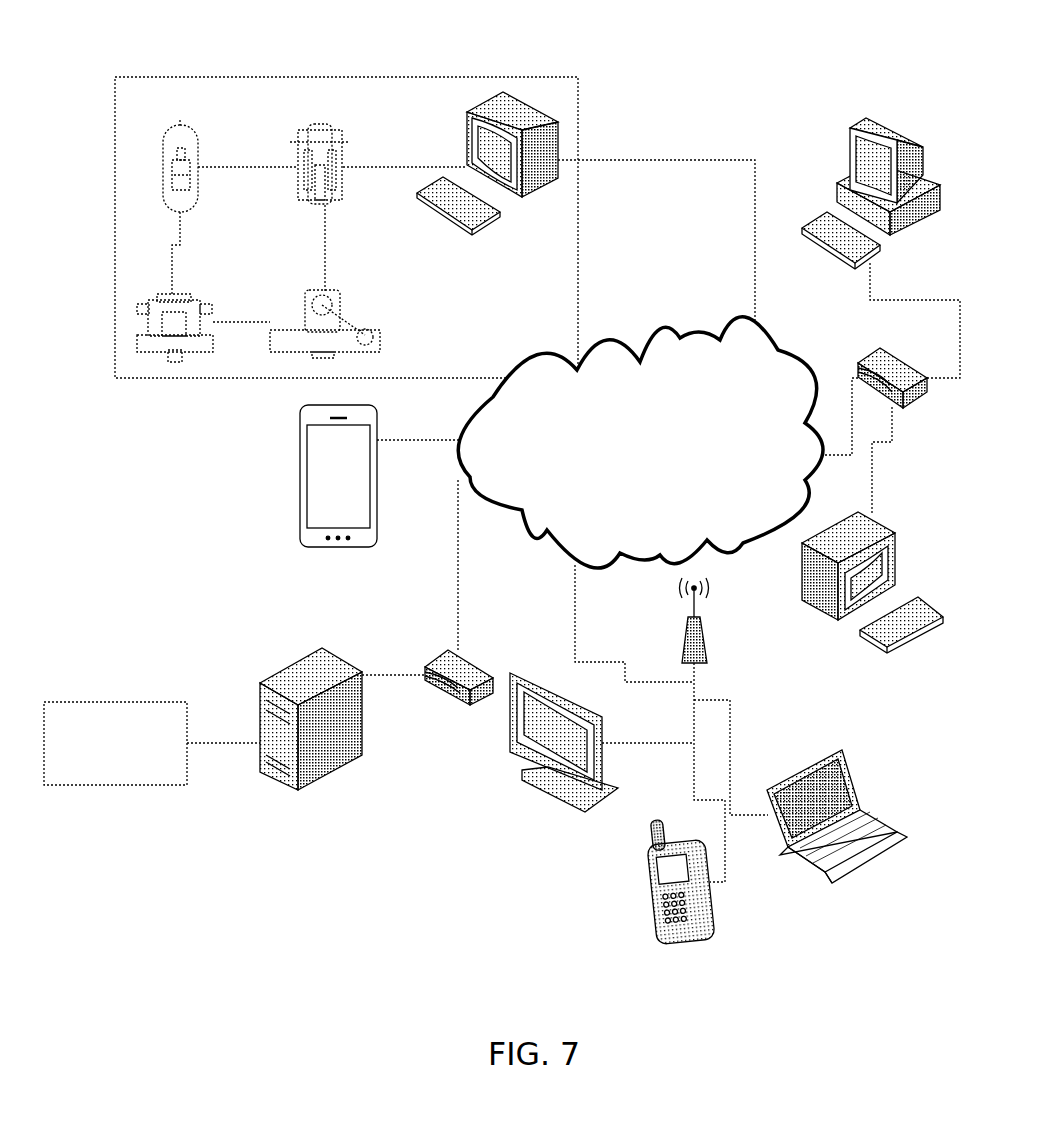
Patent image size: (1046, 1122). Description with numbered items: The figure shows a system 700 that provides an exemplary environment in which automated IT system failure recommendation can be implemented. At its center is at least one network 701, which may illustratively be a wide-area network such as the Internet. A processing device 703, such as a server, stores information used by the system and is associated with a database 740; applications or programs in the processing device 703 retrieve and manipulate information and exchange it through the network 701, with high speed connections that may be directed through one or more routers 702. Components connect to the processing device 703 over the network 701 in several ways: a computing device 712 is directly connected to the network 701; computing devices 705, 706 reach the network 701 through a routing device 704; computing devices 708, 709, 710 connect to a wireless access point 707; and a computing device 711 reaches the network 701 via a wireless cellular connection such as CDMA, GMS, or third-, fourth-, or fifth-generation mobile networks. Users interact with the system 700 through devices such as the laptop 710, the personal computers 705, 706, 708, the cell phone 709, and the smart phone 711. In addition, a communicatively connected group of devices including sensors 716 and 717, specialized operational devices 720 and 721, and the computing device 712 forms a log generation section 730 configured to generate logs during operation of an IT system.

The system 700 is at (552, 24).
The log generation section 730 is at (440, 103).
The sensor 716 is at (205, 166).
The sensor 717 is at (348, 164).
The specialized operational device 720 is at (195, 327).
The specialized operational device 721 is at (341, 324).
The computing device 712 is at (487, 163).
The network 701 is at (623, 491).
The smart phone 711 is at (338, 492).
The personal computer 705 is at (871, 182).
The routing device 704 is at (880, 364).
The personal computer 706 is at (863, 582).
The database 740 is at (96, 778).
The processing device 703 is at (318, 731).
The router 702 is at (459, 700).
The personal computer 708 is at (564, 765).
The wireless access point 707 is at (715, 620).
The cell phone 709 is at (679, 897).
The laptop 710 is at (837, 836).